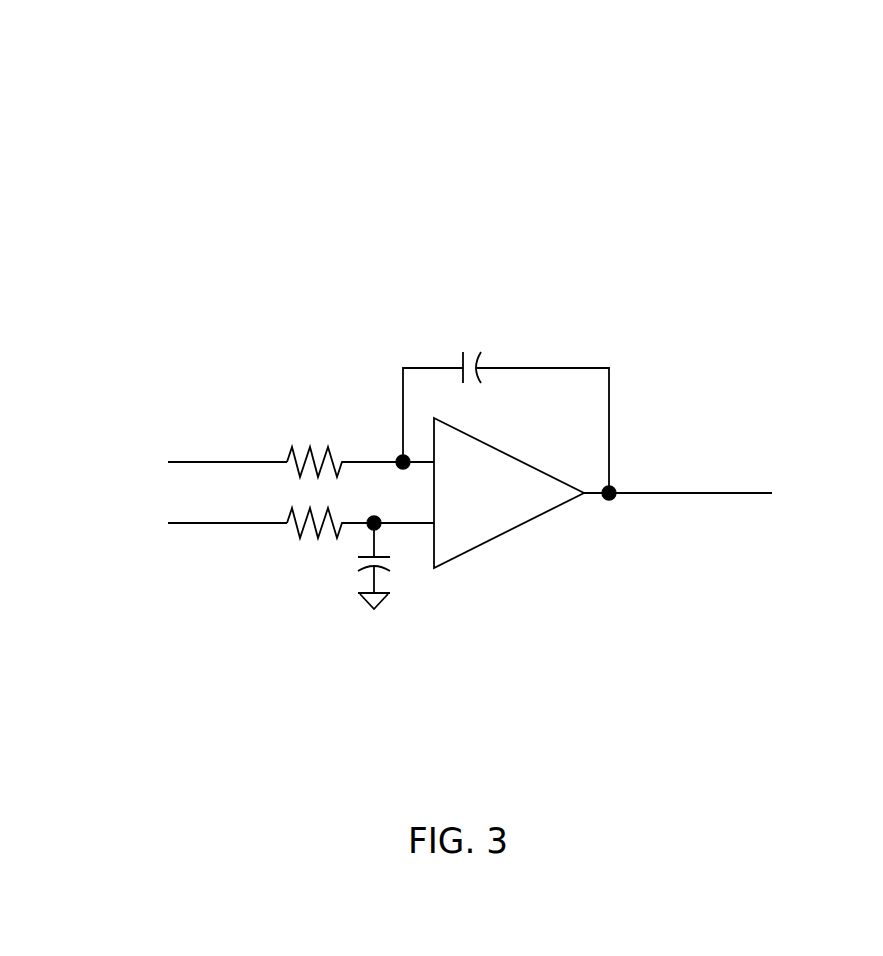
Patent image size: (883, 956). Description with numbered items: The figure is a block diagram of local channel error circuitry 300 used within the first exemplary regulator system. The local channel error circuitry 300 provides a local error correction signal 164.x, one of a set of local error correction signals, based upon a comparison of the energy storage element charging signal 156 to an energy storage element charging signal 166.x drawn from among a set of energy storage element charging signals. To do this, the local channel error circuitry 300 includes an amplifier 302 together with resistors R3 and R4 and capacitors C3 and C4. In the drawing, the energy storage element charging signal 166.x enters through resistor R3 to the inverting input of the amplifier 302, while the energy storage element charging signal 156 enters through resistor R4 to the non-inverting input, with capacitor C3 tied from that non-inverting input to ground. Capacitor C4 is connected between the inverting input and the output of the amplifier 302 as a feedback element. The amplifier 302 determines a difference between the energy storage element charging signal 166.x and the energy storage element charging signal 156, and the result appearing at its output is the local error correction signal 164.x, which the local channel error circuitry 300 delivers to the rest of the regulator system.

The local channel error circuitry 300 is at (830, 92).
The amplifier 302 is at (482, 545).
The energy storage element charging signal 166.x is at (202, 461).
The energy storage element charging signal 156 is at (204, 521).
The local error correction signal 164.x is at (705, 491).
The resistor R3 is at (360, 446).
The resistor R4 is at (360, 543).
The capacitor C3 is at (386, 566).
The capacitor C4 is at (506, 408).